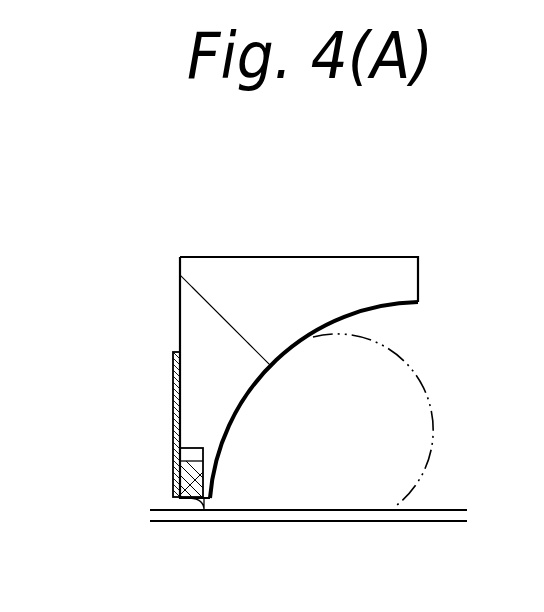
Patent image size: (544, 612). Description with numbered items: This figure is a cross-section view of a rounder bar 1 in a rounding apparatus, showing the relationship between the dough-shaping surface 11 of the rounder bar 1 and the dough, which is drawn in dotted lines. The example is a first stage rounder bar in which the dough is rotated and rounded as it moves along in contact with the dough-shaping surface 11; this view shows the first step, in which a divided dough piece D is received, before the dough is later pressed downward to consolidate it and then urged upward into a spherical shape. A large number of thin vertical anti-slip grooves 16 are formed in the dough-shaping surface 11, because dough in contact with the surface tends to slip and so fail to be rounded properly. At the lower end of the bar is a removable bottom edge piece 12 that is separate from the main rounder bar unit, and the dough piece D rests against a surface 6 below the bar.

The rounder bar 1 is at (333, 263).
The dough-shaping surface 11 is at (395, 406).
The anti-slip grooves 16 is at (174, 414).
The removable bottom edge piece 12 is at (180, 474).
The divided dough piece D is at (420, 437).
The inner ring surface 6 is at (430, 509).